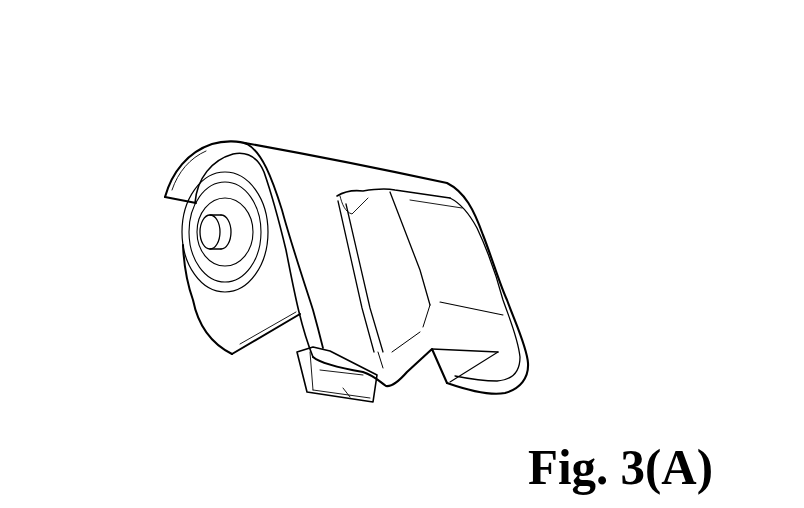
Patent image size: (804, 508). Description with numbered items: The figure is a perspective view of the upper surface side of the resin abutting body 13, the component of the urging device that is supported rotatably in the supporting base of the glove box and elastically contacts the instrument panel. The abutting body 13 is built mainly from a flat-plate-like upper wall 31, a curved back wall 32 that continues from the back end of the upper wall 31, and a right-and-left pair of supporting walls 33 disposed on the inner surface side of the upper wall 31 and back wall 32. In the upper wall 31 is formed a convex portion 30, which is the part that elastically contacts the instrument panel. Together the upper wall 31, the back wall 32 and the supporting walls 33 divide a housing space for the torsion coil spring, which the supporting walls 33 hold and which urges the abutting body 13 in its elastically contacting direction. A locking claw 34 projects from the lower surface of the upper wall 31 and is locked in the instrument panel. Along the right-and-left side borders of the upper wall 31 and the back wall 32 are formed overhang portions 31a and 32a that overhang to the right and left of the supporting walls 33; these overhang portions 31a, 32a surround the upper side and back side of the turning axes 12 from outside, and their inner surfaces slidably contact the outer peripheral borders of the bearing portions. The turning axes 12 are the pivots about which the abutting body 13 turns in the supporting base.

The abutting body 13 is at (281, 104).
The back wall 32 is at (312, 157).
The overhang portion 32a is at (203, 155).
The upper wall 31 is at (323, 196).
The overhang portion 31a is at (275, 208).
The convex portion 30 is at (463, 257).
The turning axis 12 is at (177, 283).
The supporting wall 33 is at (203, 328).
The locking claw 34 is at (352, 405).